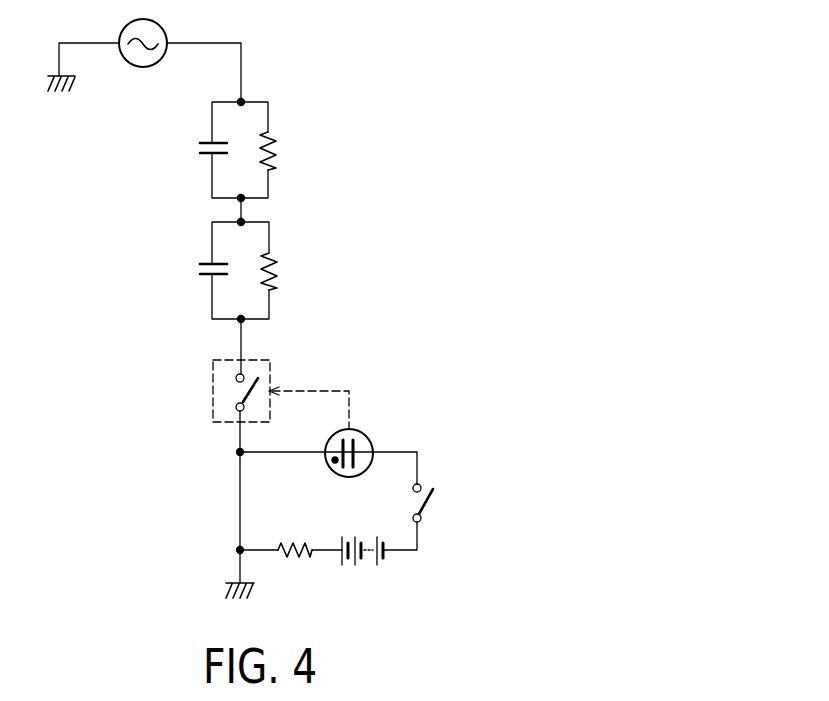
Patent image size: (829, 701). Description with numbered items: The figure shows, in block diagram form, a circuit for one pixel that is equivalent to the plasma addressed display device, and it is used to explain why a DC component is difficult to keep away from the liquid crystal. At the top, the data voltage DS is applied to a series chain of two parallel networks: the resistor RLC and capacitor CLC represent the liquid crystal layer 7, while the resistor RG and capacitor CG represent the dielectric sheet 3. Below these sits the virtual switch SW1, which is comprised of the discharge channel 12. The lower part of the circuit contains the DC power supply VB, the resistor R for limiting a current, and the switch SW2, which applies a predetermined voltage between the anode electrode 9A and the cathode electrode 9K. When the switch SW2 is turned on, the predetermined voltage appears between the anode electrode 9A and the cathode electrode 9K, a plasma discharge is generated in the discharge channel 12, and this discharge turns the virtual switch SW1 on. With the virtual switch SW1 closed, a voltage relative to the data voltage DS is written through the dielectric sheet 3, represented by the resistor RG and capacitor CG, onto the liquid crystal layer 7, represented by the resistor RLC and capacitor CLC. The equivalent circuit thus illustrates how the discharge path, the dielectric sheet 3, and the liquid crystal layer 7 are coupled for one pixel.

The data voltage DS is at (120, 32).
The capacitor for the liquid crystal layer CLC is at (187, 153).
The resistor for the liquid crystal layer RLC is at (295, 151).
The liquid crystal layer 7 is at (202, 174).
The capacitor for the dielectric sheet CG is at (194, 271).
The resistor for the dielectric sheet RG is at (287, 271).
The dielectric sheet 3 is at (204, 293).
The discharge channel 12 is at (308, 369).
The virtual switch SW1 is at (210, 390).
The anode electrode 9A is at (342, 441).
The cathode electrode 9K is at (357, 443).
The switch SW2 is at (450, 503).
The resistor for limiting a current R is at (295, 568).
The DC power supply VB is at (362, 569).